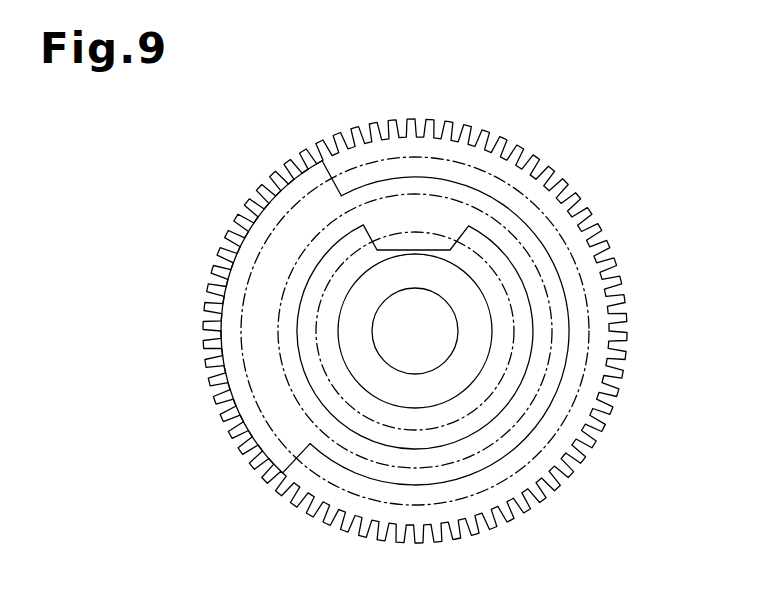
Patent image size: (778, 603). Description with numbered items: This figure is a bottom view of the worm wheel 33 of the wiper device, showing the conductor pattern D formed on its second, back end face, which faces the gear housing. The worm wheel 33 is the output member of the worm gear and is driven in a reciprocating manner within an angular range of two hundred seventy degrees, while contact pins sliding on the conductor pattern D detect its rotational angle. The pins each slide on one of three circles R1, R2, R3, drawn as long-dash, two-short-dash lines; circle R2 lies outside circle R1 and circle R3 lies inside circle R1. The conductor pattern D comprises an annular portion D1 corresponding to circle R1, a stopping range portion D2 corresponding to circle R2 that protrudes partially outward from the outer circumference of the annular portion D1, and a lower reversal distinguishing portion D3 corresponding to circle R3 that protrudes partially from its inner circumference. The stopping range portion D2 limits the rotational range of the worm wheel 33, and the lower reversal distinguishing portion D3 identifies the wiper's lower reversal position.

The worm wheel 33 is at (592, 204).
The conductor pattern D is at (563, 285).
The annular portion D1 is at (551, 262).
The stopping range portion D2 is at (303, 188).
The lower reversal distinguishing portion D3 is at (418, 237).
The circle R1 is at (551, 324).
The circle R2 is at (590, 370).
The circle R3 is at (511, 333).